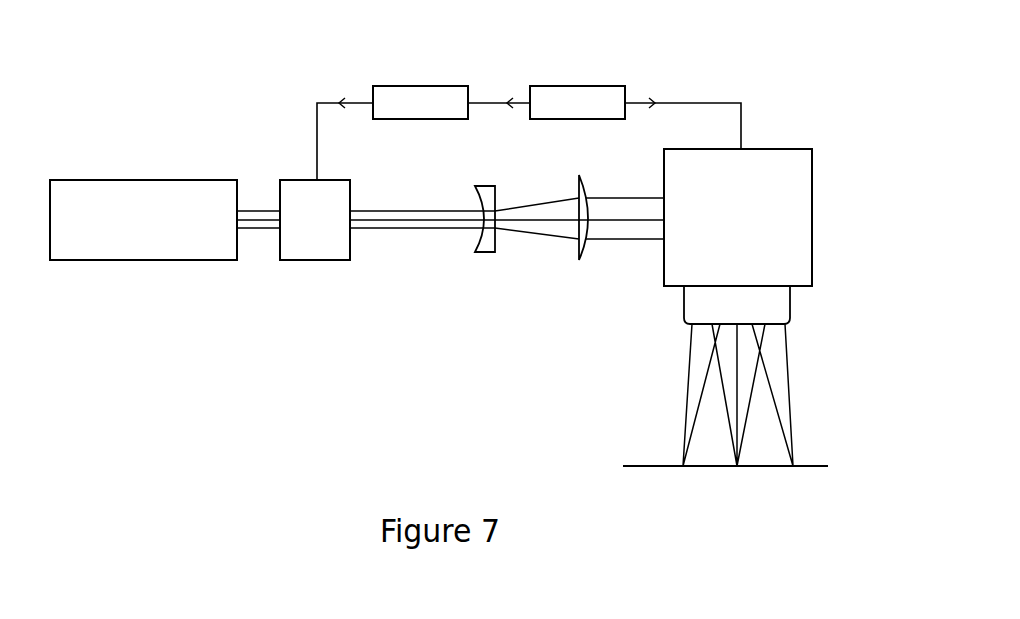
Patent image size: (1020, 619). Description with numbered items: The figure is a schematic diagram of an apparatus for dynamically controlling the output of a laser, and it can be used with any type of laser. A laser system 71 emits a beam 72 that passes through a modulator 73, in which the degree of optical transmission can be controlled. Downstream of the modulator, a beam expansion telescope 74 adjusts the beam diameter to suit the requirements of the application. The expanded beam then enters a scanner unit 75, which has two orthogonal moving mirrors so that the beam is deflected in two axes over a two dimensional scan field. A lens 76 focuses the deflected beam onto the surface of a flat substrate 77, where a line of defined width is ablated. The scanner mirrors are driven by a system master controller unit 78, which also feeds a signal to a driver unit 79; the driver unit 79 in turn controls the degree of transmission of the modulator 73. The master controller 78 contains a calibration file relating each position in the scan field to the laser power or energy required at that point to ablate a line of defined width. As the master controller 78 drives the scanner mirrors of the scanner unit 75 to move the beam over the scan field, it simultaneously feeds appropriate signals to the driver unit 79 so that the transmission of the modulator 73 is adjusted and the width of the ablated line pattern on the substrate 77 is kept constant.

The laser system 71 is at (143, 265).
The beam 72 is at (267, 232).
The modulator 73 is at (322, 267).
The beam expansion telescope 74 is at (577, 270).
The scanner unit 75 is at (783, 147).
The lens 76 is at (720, 308).
The flat substrate 77 is at (667, 463).
The system master controller unit 78 is at (592, 82).
The driver unit 79 is at (377, 83).